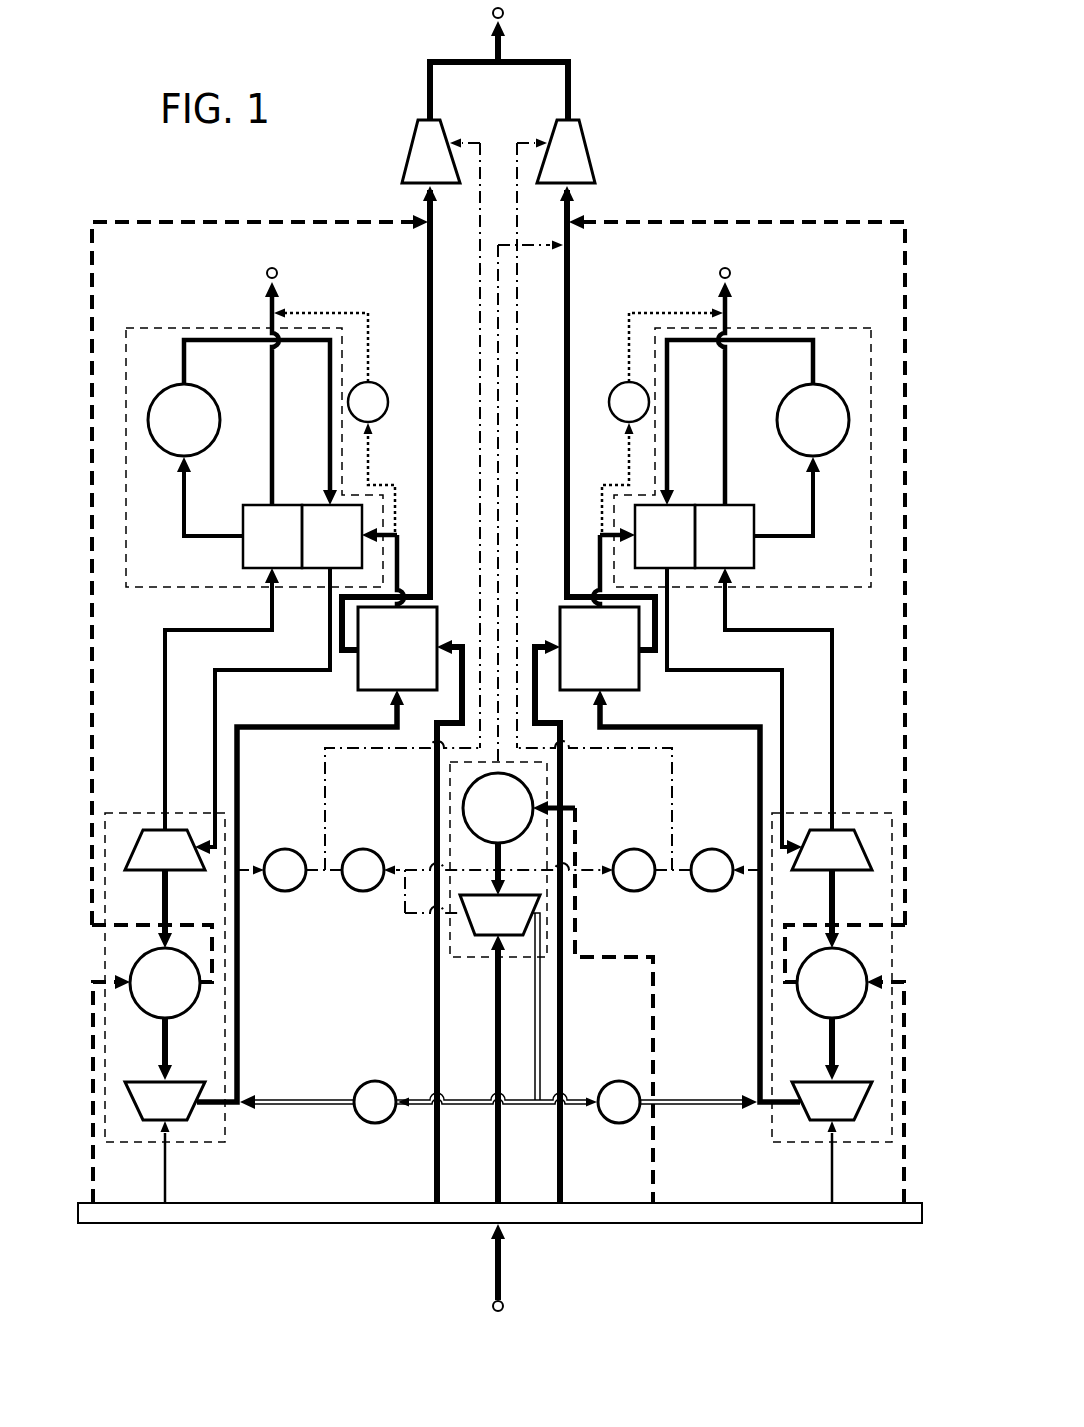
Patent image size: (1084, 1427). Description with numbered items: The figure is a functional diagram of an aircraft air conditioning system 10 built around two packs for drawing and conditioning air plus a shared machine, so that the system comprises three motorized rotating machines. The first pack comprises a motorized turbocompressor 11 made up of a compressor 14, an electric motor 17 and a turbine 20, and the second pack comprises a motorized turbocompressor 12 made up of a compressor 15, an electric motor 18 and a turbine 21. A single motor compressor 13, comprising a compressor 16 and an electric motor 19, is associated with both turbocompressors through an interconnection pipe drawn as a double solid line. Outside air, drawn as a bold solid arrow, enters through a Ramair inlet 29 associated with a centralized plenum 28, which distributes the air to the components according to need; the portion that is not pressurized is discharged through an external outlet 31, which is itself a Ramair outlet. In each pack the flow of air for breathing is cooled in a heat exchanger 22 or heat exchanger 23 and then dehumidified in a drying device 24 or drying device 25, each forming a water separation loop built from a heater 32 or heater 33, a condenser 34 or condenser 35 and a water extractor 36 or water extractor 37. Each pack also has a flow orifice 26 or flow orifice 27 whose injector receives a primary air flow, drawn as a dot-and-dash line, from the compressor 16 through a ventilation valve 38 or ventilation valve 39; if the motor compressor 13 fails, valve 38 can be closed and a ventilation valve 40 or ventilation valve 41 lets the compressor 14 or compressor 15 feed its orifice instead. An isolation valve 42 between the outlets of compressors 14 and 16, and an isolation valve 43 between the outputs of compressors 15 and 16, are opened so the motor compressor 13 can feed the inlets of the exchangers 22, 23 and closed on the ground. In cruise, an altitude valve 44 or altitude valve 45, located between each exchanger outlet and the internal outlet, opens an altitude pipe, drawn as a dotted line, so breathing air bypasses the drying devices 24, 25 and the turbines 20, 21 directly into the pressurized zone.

The air conditioning system 10 is at (770, 1250).
The motorized turbocompressor 11 is at (240, 1138).
The motorized turbocompressor 12 is at (758, 1138).
The motor compressor 13 is at (513, 975).
The compressor 14 is at (195, 1131).
The compressor 15 is at (805, 1131).
The compressor 16 is at (474, 946).
The electric motor 17 is at (215, 1010).
The electric motor 18 is at (784, 1010).
The electric motor 19 is at (450, 836).
The turbine 20 is at (130, 825).
The turbine 21 is at (867, 825).
The heat exchanger 22 is at (345, 684).
The heat exchanger 23 is at (650, 684).
The drying device 24 is at (142, 604).
The drying device 25 is at (852, 598).
The flow orifice 26 is at (398, 141).
The flow orifice 27 is at (599, 141).
The plenum 28 is at (620, 1242).
The Ramair inlet 29 is at (476, 1305).
The external outlet 31 is at (517, 12).
The heater 32 is at (318, 494).
The heater 33 is at (683, 494).
The condenser 34 is at (248, 494).
The condenser 35 is at (742, 494).
The water extractor 36 is at (222, 392).
The water extractor 37 is at (774, 392).
The ventilation valve 38 is at (355, 902).
The ventilation valve 39 is at (624, 841).
The ventilation valve 40 is at (278, 841).
The ventilation valve 41 is at (718, 841).
The isolation valve 42 is at (352, 1073).
The isolation valve 43 is at (596, 1073).
The altitude valve 44 is at (335, 407).
The altitude valve 45 is at (662, 405).